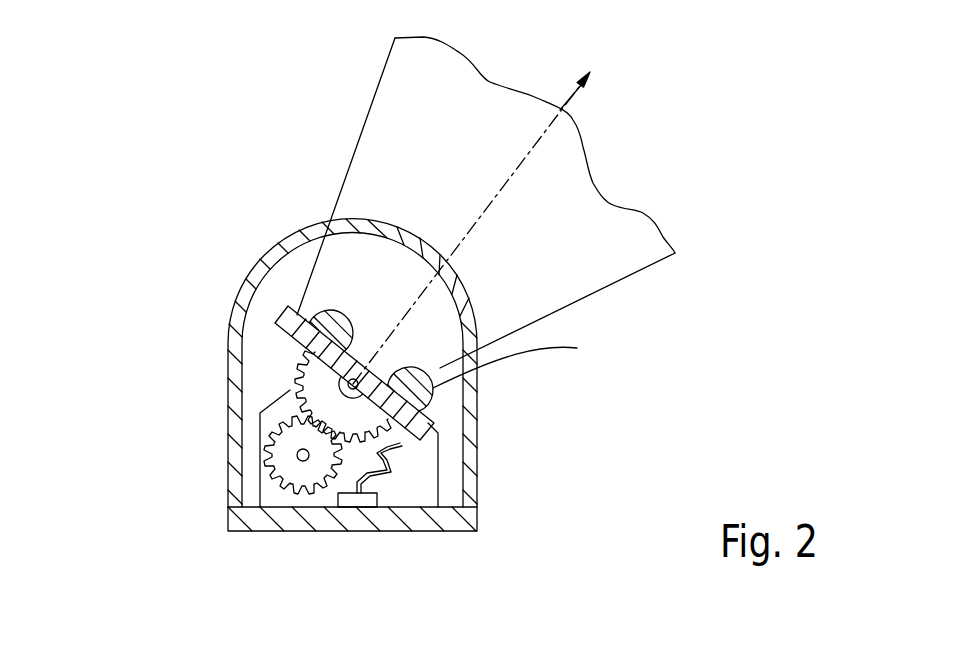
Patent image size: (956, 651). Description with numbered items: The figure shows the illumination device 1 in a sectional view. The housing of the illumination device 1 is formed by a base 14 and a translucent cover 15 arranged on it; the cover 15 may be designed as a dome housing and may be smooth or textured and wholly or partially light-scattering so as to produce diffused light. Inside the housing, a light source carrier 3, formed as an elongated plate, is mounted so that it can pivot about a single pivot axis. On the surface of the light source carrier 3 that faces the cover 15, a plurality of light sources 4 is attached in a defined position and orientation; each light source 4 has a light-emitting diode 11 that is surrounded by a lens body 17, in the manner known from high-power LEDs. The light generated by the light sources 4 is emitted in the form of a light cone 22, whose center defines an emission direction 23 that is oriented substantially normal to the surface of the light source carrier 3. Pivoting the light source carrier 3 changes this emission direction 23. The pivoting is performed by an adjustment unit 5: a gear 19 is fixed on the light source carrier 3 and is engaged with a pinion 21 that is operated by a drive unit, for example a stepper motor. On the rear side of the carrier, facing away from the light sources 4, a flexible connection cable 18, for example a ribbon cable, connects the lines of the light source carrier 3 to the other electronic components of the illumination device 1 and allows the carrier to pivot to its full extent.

The illumination device 1 is at (170, 487).
The light source carrier 3 is at (287, 320).
The light sources 4 is at (440, 394).
The adjustment unit 5 is at (282, 493).
The light-emitting diode 11 is at (437, 378).
The base 14 is at (428, 517).
The translucent cover 15 is at (478, 460).
The lens body 17 is at (519, 361).
The connection cable 18 is at (387, 482).
The gear 19 is at (317, 377).
The pinion 21 is at (287, 458).
The light cone 22 is at (598, 245).
The emission direction 23 is at (556, 120).